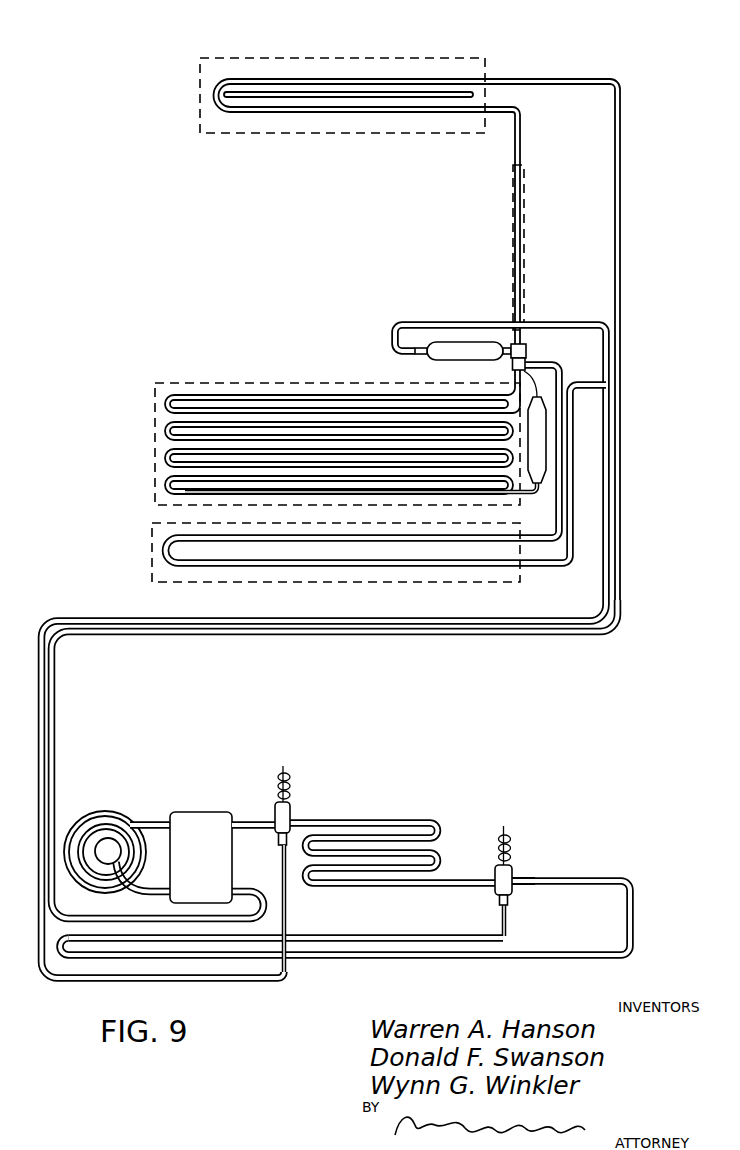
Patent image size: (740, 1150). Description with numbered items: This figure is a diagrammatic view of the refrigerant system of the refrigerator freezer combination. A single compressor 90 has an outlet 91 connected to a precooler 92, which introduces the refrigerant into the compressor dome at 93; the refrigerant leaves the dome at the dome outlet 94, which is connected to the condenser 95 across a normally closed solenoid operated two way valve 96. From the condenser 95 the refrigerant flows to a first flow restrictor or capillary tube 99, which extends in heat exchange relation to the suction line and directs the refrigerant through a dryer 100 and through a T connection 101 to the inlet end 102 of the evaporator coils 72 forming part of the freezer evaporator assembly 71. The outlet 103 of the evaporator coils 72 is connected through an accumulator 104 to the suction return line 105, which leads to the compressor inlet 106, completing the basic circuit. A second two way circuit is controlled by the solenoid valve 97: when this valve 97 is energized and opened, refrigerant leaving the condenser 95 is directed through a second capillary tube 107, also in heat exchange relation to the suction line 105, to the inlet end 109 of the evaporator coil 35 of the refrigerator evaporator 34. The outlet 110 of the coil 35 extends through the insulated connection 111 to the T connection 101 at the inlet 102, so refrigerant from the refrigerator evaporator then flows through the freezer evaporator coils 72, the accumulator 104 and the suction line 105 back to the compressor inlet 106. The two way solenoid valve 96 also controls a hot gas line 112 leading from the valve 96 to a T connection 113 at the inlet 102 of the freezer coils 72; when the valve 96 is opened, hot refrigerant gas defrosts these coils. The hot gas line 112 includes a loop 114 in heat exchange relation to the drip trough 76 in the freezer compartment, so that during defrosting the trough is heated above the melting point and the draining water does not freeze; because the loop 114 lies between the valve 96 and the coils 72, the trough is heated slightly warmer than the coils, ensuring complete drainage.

The refrigerator evaporator 34 is at (231, 62).
The evaporator coil 35 is at (213, 97).
The inlet end 109 is at (500, 79).
The outlet 110 is at (500, 108).
The insulated connection 111 is at (524, 195).
The capillary tube 99 is at (604, 322).
The dryer 100 is at (474, 345).
The T connection 101 is at (528, 345).
The T connection 113 is at (527, 352).
The inlet end 102 is at (516, 378).
The hot gas line 112 is at (556, 380).
The freezer evaporator assembly 71 is at (153, 388).
The evaporator coils 72 is at (166, 485).
The accumulator 104 is at (537, 437).
The outlet 103 is at (372, 503).
The suction return line 105 is at (620, 572).
The loop 114 is at (165, 550).
The drip trough 76 is at (152, 570).
The precooler 92 is at (108, 812).
The compressor dome inlet 93 is at (158, 822).
The dome outlet 94 is at (238, 822).
The solenoid operated two way valve 96 is at (288, 814).
The condenser 95 is at (410, 822).
The compressor 90 is at (210, 865).
The outlet 91 is at (160, 895).
The compressor inlet 106 is at (252, 888).
The second capillary tube 107 is at (508, 925).
The solenoid valve 97 is at (515, 870).